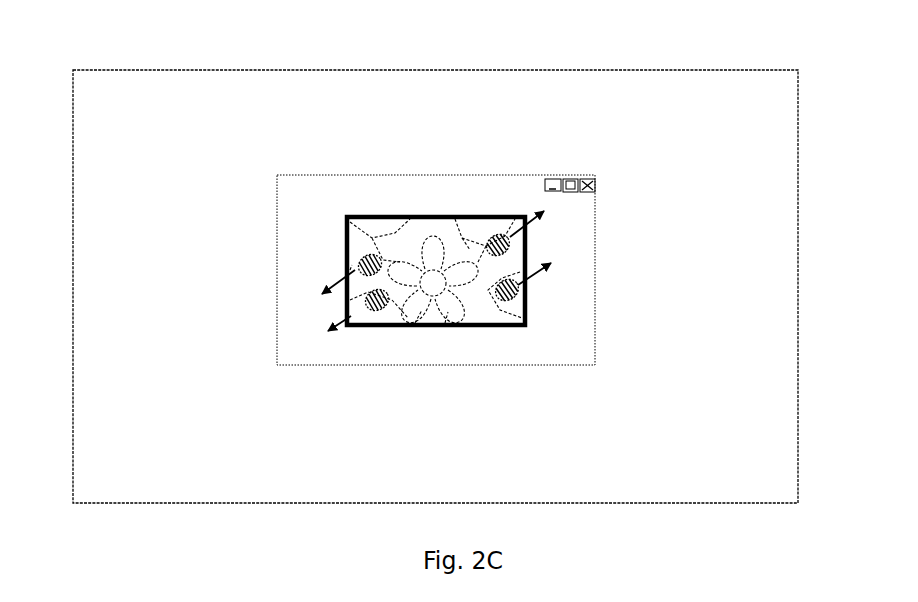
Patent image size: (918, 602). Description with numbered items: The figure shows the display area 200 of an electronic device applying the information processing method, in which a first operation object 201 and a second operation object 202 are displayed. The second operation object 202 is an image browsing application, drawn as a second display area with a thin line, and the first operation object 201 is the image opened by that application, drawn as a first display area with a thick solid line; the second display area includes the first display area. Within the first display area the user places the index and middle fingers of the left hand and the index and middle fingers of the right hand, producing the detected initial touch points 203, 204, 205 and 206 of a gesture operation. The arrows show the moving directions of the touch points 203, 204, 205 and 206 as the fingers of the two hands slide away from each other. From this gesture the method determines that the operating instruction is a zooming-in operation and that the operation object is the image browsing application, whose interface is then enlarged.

The display area 200 is at (658, 69).
The first operation object 201 is at (353, 219).
The second operation object 202 is at (597, 193).
The touch point 203 is at (363, 261).
The touch point 204 is at (497, 237).
The touch point 205 is at (376, 308).
The touch point 206 is at (508, 298).